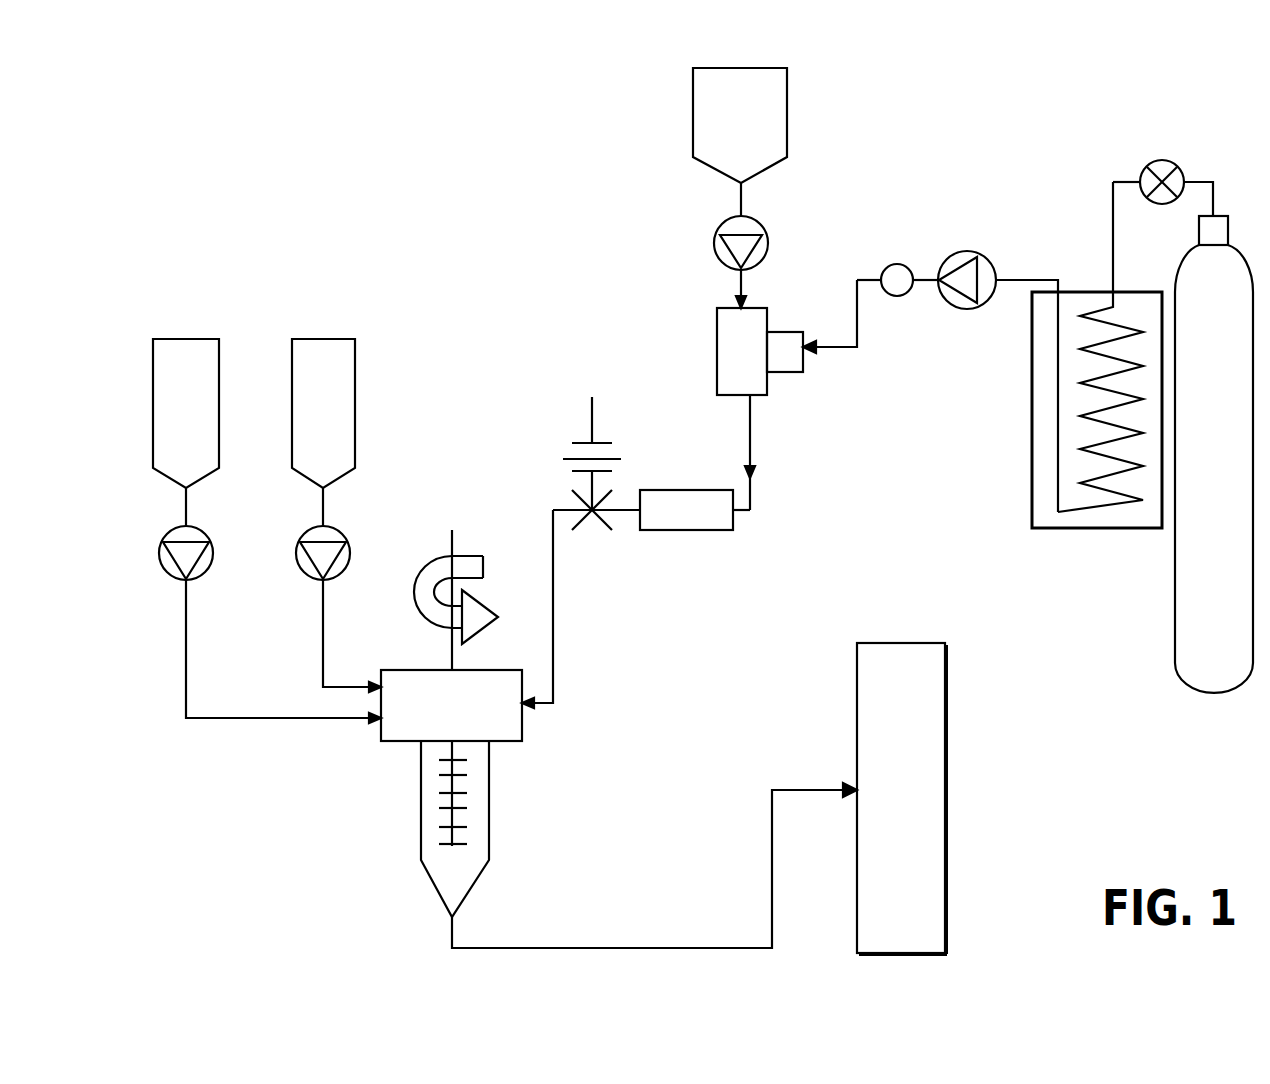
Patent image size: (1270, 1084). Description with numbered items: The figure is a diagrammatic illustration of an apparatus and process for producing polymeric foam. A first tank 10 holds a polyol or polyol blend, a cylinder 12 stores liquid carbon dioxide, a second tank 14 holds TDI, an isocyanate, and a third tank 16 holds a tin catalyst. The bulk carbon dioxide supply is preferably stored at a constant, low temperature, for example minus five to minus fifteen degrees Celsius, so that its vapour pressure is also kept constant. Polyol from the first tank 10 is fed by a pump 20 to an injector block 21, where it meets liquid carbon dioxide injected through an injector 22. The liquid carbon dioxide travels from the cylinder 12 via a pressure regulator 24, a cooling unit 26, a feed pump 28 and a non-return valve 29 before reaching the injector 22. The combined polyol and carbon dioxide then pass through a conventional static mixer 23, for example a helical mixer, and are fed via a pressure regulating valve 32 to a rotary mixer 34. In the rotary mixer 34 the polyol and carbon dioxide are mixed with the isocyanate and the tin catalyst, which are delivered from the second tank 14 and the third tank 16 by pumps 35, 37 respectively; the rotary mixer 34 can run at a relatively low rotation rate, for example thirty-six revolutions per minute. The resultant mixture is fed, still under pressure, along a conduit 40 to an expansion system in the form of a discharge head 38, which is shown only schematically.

The first tank 10 is at (787, 120).
The cylinder 12 is at (1175, 655).
The second tank 14 is at (185, 339).
The third tank 16 is at (322, 339).
The pump 20 is at (714, 250).
The injector block 21 is at (712, 345).
The injector 22 is at (803, 372).
The static mixer 23 is at (680, 535).
The pressure regulator 24 is at (1140, 175).
The cooling unit 26 is at (1080, 542).
The feed pump 28 is at (988, 257).
The non-return valve 29 is at (885, 268).
The pressure regulating valve 32 is at (598, 534).
The rotary mixer 34 is at (522, 753).
The pump 35 is at (214, 553).
The pump 37 is at (351, 553).
The discharge head 38 is at (945, 762).
The conduit 40 is at (772, 870).